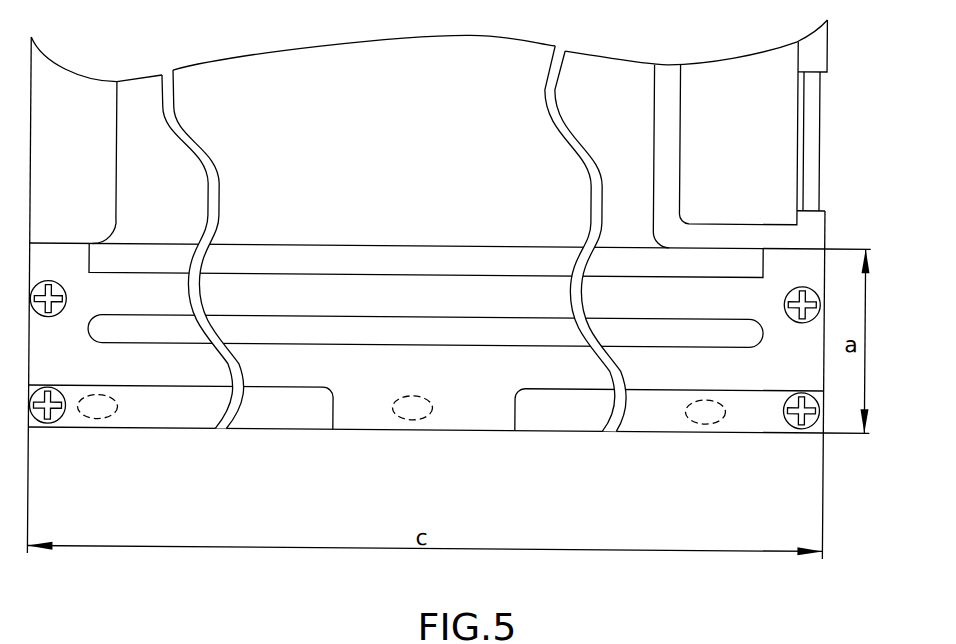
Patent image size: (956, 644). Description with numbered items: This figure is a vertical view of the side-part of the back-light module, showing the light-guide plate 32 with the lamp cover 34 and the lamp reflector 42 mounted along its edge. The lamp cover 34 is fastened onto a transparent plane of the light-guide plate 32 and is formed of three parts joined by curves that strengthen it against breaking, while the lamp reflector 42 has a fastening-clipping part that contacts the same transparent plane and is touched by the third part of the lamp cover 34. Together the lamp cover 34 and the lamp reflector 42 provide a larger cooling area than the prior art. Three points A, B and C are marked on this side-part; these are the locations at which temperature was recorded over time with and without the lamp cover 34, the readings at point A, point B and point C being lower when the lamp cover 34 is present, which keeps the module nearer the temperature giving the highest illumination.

The light-guide plate 32 is at (472, 178).
The lamp cover 34 is at (390, 318).
The lamp reflector 42 is at (752, 413).
The point A is at (100, 407).
The point B is at (413, 407).
The point C is at (706, 413).